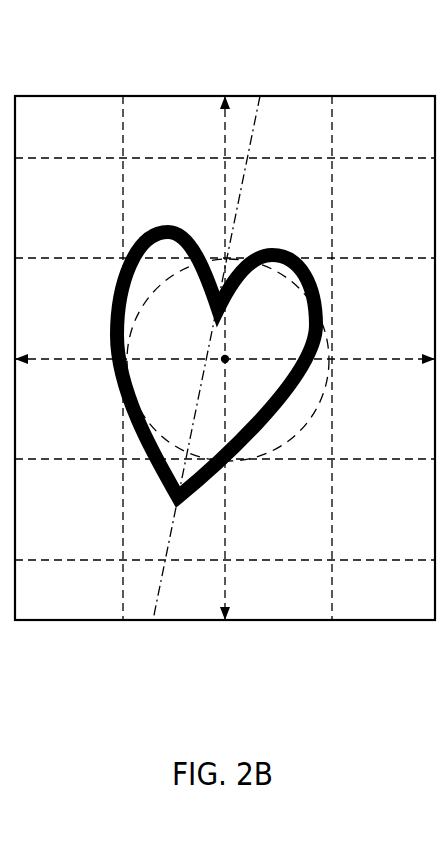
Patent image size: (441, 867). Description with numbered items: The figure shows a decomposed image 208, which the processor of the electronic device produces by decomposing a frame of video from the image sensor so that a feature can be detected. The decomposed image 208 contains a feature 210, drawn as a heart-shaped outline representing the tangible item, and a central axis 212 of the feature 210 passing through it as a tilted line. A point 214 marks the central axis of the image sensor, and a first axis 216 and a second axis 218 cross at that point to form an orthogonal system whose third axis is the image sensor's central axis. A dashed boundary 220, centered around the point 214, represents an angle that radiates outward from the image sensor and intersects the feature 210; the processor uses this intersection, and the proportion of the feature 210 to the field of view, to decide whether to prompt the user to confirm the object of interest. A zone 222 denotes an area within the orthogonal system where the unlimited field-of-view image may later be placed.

The decomposed image 208 is at (65, 96).
The feature 210 is at (213, 488).
The central axis 212 is at (158, 579).
The point 214 is at (213, 361).
The first axis 216 is at (229, 575).
The second axis 218 is at (404, 357).
The boundary 220 is at (312, 422).
The zone 222 is at (90, 129).